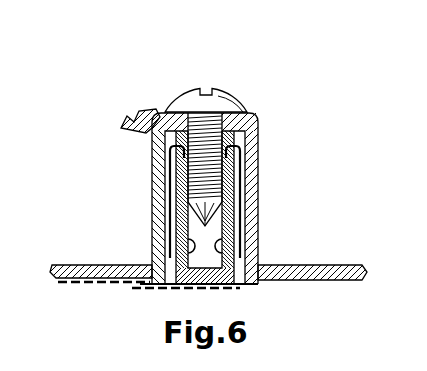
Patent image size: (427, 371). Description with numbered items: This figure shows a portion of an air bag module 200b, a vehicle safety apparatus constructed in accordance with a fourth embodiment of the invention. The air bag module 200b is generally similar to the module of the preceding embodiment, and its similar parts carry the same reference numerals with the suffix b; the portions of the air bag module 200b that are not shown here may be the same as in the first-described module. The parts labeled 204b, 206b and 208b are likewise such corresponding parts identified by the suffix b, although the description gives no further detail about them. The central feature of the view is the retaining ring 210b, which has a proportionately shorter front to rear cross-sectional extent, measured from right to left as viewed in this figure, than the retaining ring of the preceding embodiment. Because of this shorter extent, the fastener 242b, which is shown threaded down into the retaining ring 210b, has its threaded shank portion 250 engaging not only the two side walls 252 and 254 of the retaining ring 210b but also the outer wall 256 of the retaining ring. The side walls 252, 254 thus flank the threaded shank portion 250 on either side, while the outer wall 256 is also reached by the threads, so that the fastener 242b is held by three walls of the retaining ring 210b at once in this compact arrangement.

The air bag module 200b is at (345, 144).
The first panel 204b is at (340, 265).
The second panel 206b is at (86, 264).
The adhesive layer 208b is at (80, 283).
The retaining ring 210b is at (230, 284).
The fastener 242b is at (220, 87).
The threaded shank portion 250 is at (240, 167).
The side wall 252 is at (160, 233).
The side wall 254 is at (226, 241).
The outer wall 256 is at (183, 150).